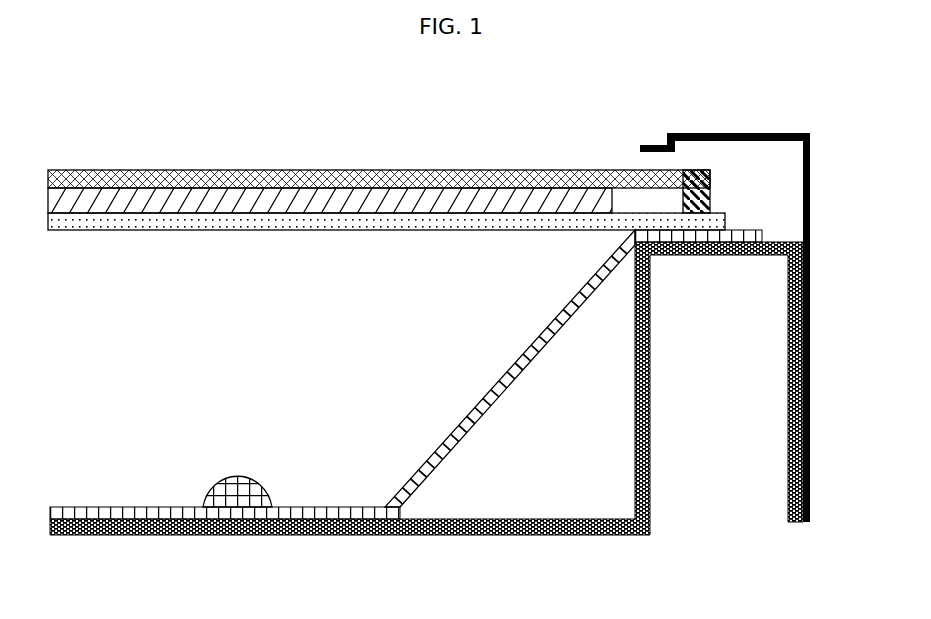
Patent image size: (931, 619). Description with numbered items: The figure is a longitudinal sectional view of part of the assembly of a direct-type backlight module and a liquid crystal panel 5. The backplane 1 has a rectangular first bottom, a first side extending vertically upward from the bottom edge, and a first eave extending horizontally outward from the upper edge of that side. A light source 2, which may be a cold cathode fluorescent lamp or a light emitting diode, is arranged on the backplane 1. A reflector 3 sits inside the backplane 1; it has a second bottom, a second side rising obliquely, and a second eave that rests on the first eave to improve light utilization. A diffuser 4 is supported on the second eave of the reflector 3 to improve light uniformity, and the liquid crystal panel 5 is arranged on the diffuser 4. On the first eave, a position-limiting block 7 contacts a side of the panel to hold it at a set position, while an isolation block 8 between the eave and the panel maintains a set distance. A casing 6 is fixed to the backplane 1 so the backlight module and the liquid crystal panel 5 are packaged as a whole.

The backplane 1 is at (643, 402).
The light source 2 is at (240, 470).
The reflector 3 is at (463, 417).
The diffuser 4 is at (252, 222).
The liquid crystal panel 5 is at (368, 172).
The casing 6 is at (785, 132).
The position-limiting block 7 is at (690, 203).
The isolation block 8 is at (202, 200).